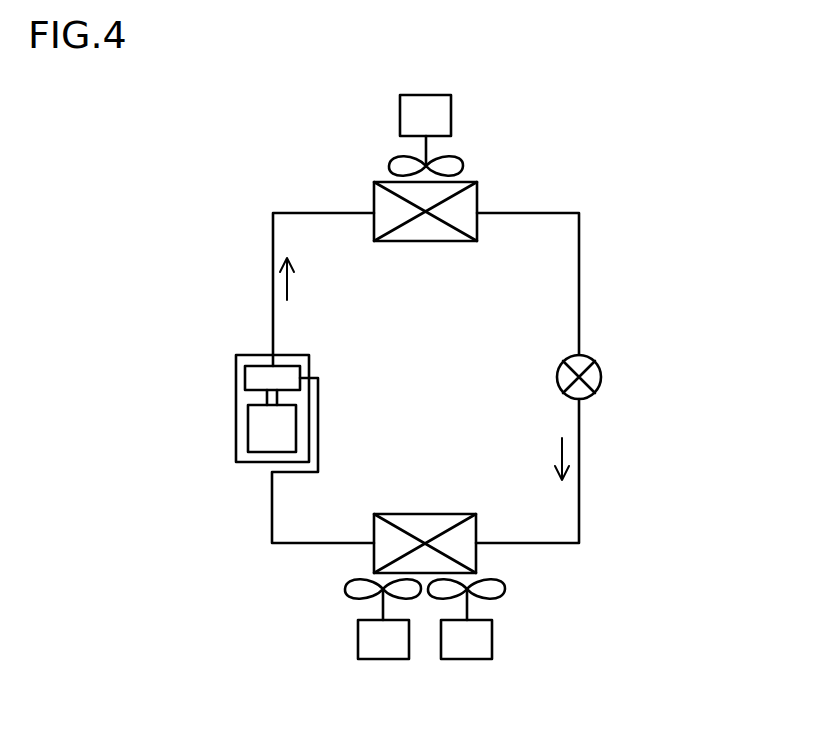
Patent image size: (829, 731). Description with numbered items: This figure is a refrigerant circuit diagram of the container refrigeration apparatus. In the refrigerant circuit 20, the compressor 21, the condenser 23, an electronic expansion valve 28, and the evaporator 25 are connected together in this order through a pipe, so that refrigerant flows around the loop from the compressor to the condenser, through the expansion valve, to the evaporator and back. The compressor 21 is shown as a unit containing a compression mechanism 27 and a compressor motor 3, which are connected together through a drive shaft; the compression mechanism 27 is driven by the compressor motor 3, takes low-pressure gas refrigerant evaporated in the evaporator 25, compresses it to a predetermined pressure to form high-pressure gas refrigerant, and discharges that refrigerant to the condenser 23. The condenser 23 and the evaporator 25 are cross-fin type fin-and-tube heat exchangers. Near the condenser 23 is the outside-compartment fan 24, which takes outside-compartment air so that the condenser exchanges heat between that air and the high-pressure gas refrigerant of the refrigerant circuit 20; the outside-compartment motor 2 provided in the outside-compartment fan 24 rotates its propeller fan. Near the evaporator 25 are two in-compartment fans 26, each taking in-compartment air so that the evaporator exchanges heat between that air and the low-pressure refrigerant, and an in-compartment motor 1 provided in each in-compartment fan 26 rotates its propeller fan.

The refrigerant circuit 20 is at (287, 174).
The outside-compartment motor 2 is at (424, 95).
The outside-compartment fan 24 is at (476, 128).
The condenser 23 is at (431, 242).
The electronic expansion valve 28 is at (601, 377).
The compressor 21 is at (236, 398).
The compression mechanism 27 is at (245, 376).
The compressor motor 3 is at (248, 431).
The evaporator 25 is at (428, 514).
The in-compartment fan 26 is at (382, 668).
The in-compartment motor 1 is at (358, 643).